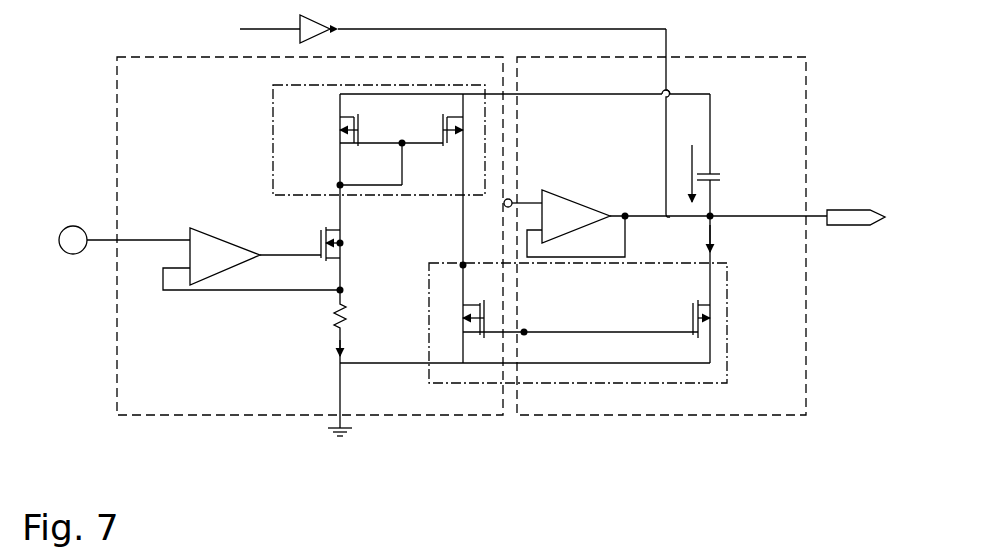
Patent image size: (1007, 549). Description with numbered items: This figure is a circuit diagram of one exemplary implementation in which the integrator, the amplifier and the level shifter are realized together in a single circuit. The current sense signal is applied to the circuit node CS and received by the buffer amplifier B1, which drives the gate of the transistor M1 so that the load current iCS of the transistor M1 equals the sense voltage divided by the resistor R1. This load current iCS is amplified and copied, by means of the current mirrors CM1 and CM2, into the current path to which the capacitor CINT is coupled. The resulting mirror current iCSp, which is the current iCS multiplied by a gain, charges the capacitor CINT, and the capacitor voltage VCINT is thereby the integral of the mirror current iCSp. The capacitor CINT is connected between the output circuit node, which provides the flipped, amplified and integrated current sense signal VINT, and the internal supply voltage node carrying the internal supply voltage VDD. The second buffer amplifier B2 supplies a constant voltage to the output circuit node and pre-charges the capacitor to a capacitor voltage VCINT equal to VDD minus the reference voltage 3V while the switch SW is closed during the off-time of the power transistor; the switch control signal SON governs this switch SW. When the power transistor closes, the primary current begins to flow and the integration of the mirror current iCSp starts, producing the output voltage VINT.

The switch-on control signal S_ON with inverter SON is at (437, 114).
The internal supply voltage VDD is at (525, 79).
The current mirror CM1 is at (350, 224).
The circuit node CS is at (107, 244).
The buffer amplifier B1 is at (249, 242).
The transistor M1 is at (345, 263).
The resistor R1 is at (294, 316).
The load current iCS is at (507, 384).
The pre-charge voltage 3V is at (511, 205).
The second buffer amplifier B2 is at (618, 219).
The switch SW is at (655, 227).
The capacitor voltage VCINT is at (680, 173).
The capacitor CINT is at (751, 228).
The mirror current iCSp is at (723, 240).
The output voltage VINT is at (797, 206).
The current mirror CM2 is at (608, 323).